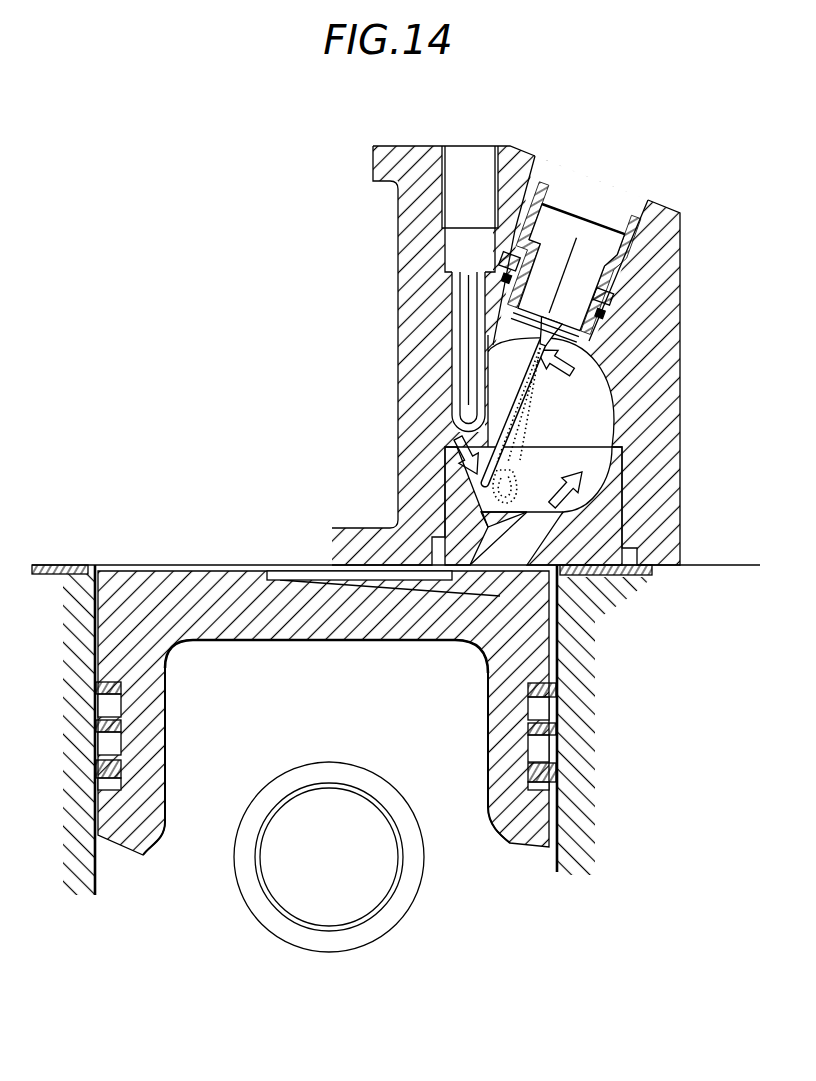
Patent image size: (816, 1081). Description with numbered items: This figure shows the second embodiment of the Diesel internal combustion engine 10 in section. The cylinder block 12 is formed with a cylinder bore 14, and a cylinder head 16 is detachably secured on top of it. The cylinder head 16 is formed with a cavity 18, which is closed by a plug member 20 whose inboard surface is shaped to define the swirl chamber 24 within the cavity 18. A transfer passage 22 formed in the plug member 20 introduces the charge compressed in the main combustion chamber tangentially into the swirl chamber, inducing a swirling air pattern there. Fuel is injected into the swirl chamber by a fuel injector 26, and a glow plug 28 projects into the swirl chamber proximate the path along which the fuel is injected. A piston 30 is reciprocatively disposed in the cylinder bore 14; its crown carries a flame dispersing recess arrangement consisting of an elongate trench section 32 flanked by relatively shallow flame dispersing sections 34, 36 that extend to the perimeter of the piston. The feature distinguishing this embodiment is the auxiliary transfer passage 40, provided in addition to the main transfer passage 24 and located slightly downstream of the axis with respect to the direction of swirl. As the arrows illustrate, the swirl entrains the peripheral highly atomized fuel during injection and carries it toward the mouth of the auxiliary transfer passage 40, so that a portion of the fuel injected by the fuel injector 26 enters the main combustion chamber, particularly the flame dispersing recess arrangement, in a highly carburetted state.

The internal combustion engine 10 is at (245, 306).
The cylinder block 12 is at (77, 640).
The cylinder bore 14 is at (97, 872).
The cylinder head 16 is at (402, 225).
The cavity 18 is at (597, 402).
The plug member 20 is at (447, 473).
The transfer passage 22 is at (571, 420).
The swirl chamber 24 is at (538, 537).
The fuel injector 26 is at (583, 196).
The glow plug 28 is at (462, 345).
The piston 30 is at (322, 648).
The elongate trench section 32 is at (457, 585).
The flame dispersing section 34 is at (296, 575).
The flame dispersing section 36 is at (359, 575).
The auxiliary transfer passage 40 is at (483, 527).